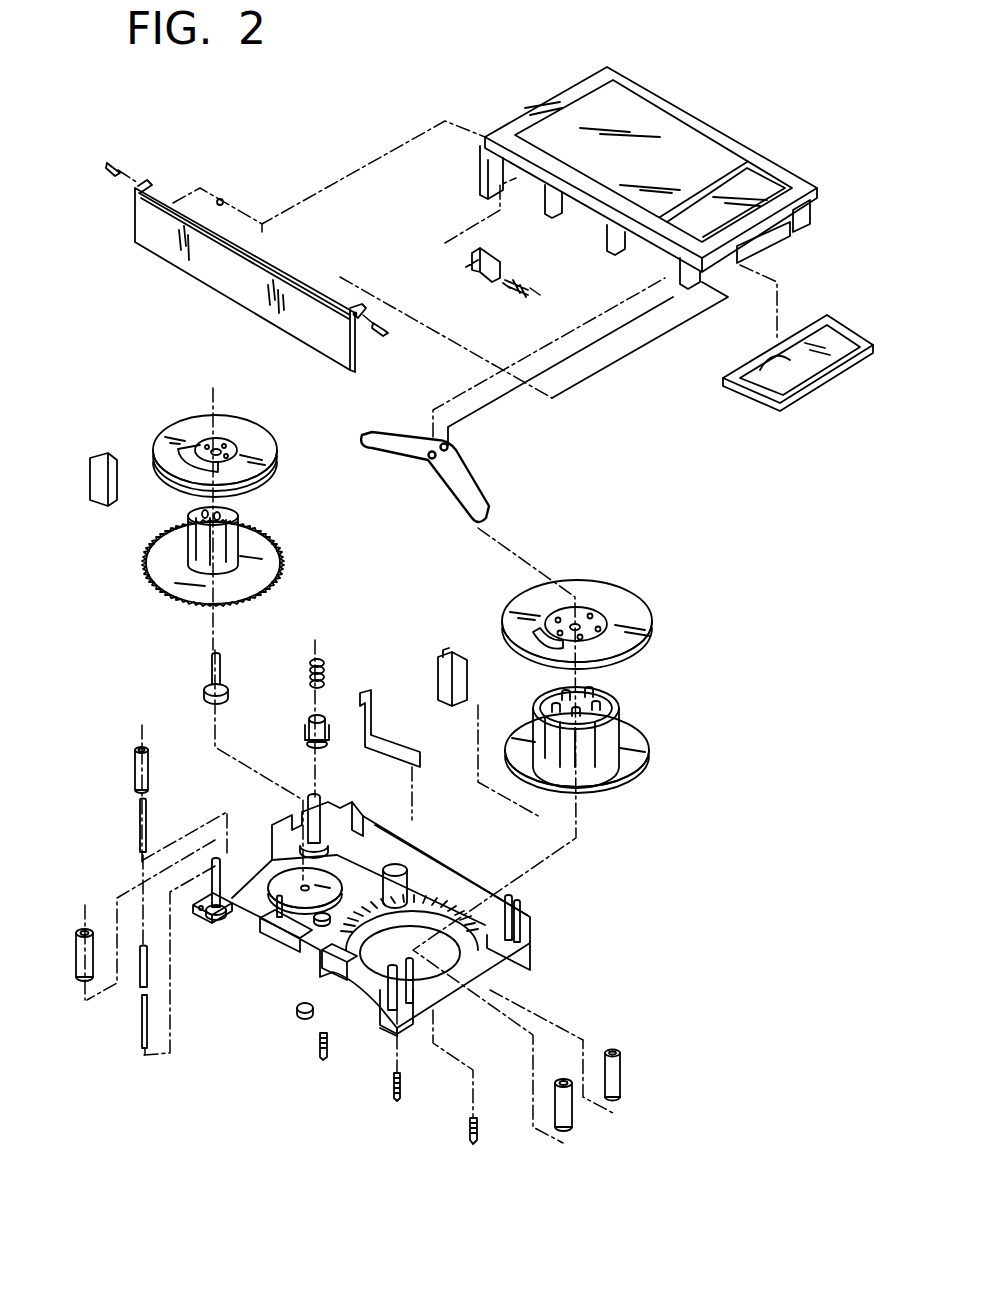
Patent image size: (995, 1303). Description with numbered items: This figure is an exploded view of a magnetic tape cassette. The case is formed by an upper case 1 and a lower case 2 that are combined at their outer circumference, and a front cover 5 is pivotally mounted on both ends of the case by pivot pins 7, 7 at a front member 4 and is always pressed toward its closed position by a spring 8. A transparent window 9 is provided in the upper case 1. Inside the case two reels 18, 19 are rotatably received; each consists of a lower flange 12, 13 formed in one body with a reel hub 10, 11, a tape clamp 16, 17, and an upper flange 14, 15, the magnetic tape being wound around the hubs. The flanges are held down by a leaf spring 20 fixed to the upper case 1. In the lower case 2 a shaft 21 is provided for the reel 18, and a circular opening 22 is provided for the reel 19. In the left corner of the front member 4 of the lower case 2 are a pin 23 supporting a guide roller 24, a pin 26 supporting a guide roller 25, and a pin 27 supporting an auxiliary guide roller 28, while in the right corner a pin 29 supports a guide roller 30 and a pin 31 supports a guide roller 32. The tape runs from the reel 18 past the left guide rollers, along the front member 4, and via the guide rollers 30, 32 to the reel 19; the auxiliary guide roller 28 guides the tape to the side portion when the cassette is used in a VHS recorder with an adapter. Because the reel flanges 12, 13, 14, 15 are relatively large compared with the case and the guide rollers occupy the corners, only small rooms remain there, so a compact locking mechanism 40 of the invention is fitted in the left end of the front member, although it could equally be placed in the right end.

The upper case 1 is at (687, 105).
The lower case 2 is at (537, 965).
The front member 4 is at (289, 968).
The front cover 5 is at (217, 270).
The pivot pins 7 is at (108, 178).
The spring 8 is at (220, 205).
The transparent window 9 is at (760, 380).
The reel hub 10 is at (236, 540).
The reel hub 11 is at (612, 732).
The lower flange 12 is at (255, 572).
The lower flange 13 is at (632, 770).
The upper flange 14 is at (275, 465).
The upper flange 15 is at (625, 608).
The tape clamp 16 is at (100, 500).
The tape clamp 17 is at (438, 675).
The reel 18 is at (340, 475).
The reel 19 is at (738, 595).
The leaf spring 20 is at (455, 462).
The shaft 21 is at (222, 665).
The circular opening 22 is at (405, 930).
The pin 23 is at (139, 826).
The guide roller 24 is at (133, 768).
The guide roller 25 is at (213, 920).
The pin 26 is at (93, 935).
The pin 27 is at (141, 1020).
The auxiliary guide roller 28 is at (138, 965).
The pin 29 is at (385, 1012).
The guide roller 30 is at (572, 1110).
The pin 31 is at (430, 983).
The guide roller 32 is at (620, 1070).
The locking mechanism 40 is at (500, 249).